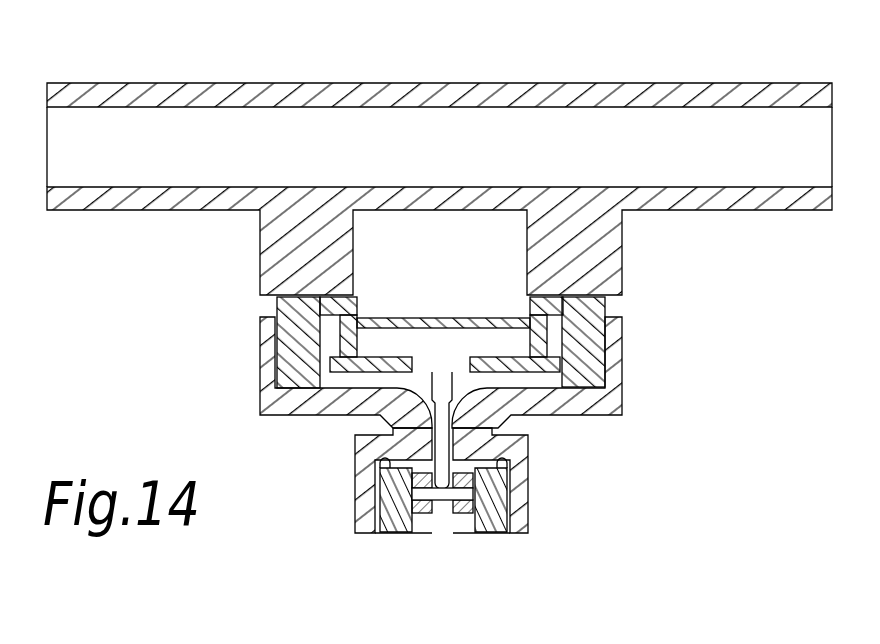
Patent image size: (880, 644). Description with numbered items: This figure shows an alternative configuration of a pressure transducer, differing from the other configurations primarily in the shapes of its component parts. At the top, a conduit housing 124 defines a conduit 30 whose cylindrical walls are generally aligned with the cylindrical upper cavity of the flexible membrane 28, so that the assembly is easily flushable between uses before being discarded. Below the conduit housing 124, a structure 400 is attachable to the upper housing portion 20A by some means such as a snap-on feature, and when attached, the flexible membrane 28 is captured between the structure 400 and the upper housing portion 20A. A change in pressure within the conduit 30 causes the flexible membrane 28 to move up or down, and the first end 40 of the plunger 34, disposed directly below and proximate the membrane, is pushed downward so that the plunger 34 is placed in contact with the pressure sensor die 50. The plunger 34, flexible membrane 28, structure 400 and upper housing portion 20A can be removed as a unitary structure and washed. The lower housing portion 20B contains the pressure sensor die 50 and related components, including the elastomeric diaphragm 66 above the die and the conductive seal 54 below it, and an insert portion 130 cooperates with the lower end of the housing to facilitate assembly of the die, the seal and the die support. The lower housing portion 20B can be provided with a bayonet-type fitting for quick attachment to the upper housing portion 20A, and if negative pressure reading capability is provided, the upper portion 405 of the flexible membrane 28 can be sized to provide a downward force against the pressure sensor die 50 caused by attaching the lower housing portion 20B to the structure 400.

The conduit housing 124 is at (235, 93).
The conduit 30 is at (382, 242).
The upper housing portion 20A is at (593, 277).
The lower housing portion 20B is at (610, 402).
The structure 400 is at (290, 349).
The upper portion of the flexible membrane 405 is at (564, 308).
The flexible membrane 28 is at (545, 347).
The first end of the plunger 40 is at (360, 347).
The plunger 34 is at (433, 440).
The insert portion 130 is at (407, 535).
The elastomeric diaphragm 66 is at (475, 461).
The pressure sensor die 50 is at (470, 497).
The conductive seal 54 is at (473, 508).